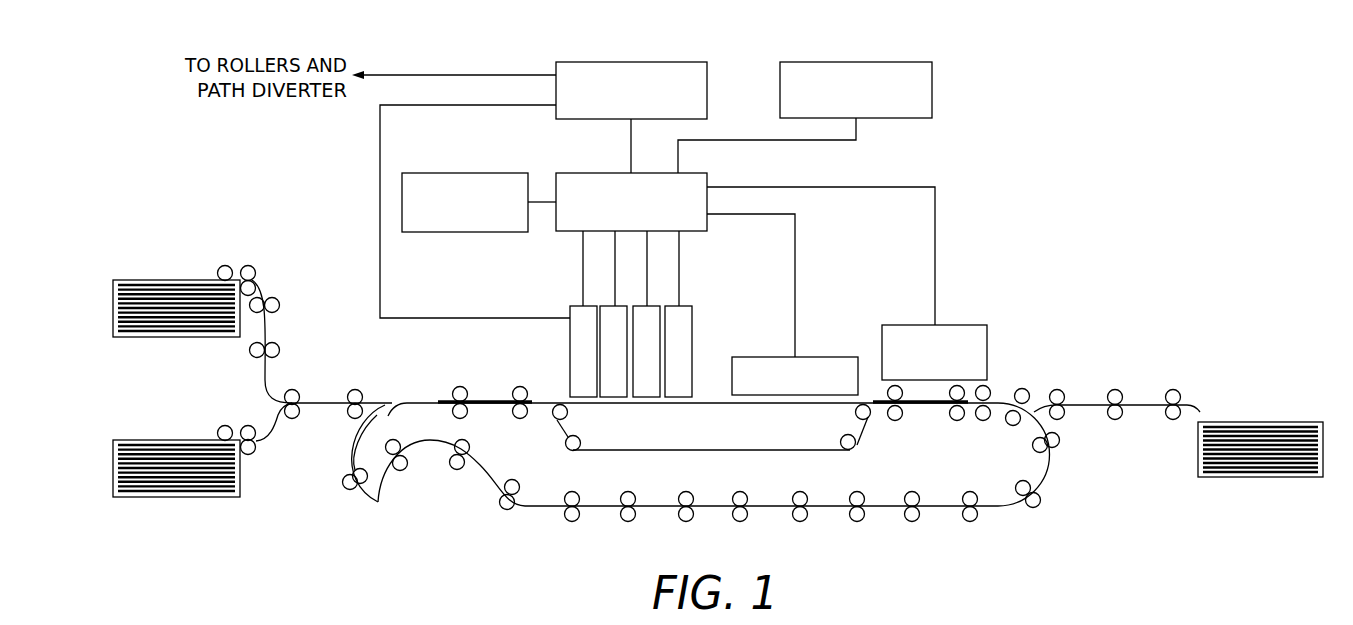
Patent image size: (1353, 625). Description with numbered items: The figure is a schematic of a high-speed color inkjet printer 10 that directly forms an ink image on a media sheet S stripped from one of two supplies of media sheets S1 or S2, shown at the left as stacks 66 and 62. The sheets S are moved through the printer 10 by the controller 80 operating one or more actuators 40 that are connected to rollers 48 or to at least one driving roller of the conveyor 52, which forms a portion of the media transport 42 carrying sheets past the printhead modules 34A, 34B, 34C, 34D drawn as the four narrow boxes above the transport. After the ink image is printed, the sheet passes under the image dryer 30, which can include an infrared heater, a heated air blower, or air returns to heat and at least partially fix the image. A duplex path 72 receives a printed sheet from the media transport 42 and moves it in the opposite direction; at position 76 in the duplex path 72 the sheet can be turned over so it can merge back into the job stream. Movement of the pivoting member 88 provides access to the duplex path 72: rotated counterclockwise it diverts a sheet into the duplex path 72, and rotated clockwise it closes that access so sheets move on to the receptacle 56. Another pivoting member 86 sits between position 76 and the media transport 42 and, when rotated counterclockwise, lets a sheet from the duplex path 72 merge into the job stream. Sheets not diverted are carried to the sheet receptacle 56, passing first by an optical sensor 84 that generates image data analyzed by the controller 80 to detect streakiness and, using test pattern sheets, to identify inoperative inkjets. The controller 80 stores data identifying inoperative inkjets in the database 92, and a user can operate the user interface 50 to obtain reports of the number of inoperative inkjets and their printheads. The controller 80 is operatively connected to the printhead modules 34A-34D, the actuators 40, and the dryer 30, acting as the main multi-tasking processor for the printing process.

The color inkjet printer 10 is at (989, 195).
The image dryer 30 is at (815, 357).
The printhead module 34A is at (569, 340).
The printhead module 34B is at (610, 305).
The printhead module 34C is at (650, 305).
The printhead module 34D is at (693, 335).
The actuators 40 is at (708, 91).
The media transport 42 is at (1031, 372).
The rollers 48 is at (279, 344).
The user interface 50 is at (470, 172).
The conveyor 52 is at (858, 453).
The sheet receptacle 56 is at (1258, 478).
The second media stack 62 is at (177, 497).
The first media stack 66 is at (177, 340).
The duplex path 72 is at (948, 514).
The position in duplex path 76 is at (371, 510).
The controller 80 is at (585, 172).
The optical sensor 84 is at (968, 325).
The pivoting member 86 is at (403, 407).
The pivoting member 88 is at (1045, 410).
The database 92 is at (934, 91).
The media sheet S is at (492, 400).
The supply of media sheets S1 is at (177, 278).
The supply of media sheets S2 is at (177, 438).